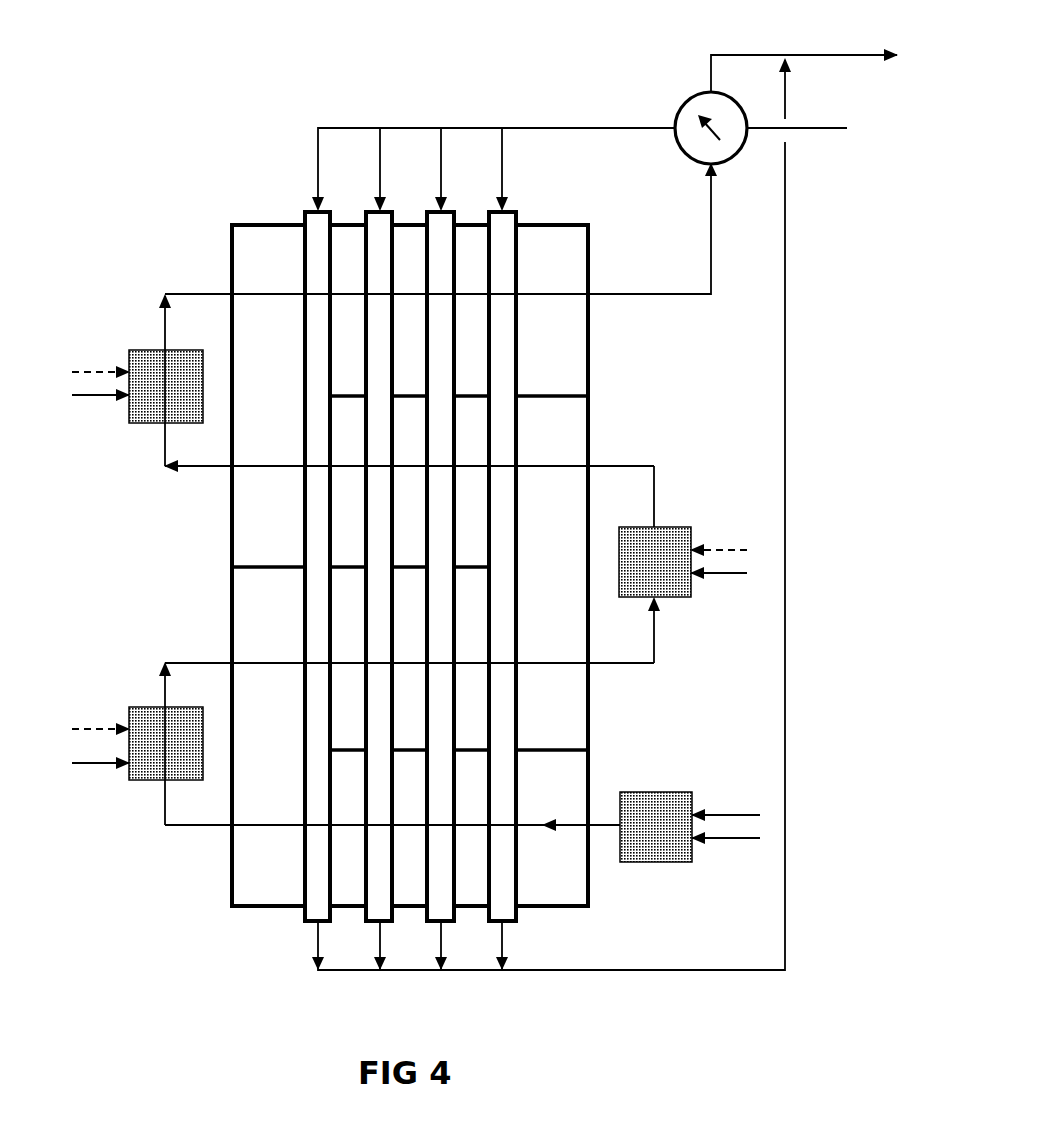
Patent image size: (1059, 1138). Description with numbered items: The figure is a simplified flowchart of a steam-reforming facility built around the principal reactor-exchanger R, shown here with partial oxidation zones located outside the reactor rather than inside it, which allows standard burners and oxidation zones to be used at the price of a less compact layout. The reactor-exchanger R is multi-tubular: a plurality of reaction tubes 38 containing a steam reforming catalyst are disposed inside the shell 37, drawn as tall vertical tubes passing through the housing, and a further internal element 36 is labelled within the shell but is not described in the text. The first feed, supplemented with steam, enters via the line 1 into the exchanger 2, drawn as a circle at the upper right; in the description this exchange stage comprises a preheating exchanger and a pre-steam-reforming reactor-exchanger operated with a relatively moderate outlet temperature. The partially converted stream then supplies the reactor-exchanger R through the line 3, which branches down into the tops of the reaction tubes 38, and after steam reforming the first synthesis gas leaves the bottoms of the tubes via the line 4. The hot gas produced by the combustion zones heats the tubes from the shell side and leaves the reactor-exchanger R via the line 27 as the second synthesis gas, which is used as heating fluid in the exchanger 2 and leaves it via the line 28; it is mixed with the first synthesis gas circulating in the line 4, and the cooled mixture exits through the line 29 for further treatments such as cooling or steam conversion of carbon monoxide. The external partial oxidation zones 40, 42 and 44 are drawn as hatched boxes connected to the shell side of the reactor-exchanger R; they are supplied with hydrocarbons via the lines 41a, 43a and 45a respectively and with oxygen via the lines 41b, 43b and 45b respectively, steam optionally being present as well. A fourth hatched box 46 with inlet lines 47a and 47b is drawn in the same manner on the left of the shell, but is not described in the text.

The reactor-exchanger R is at (222, 190).
The line 1 is at (793, 133).
The exchanger 2 is at (675, 110).
The line 3 is at (540, 130).
The line 4 is at (630, 972).
The line 27 is at (643, 297).
The line 28 is at (703, 80).
The line 29 is at (820, 60).
The baffle 36 is at (268, 567).
The shell 37 is at (594, 375).
The reaction tubes 38 is at (363, 235).
The external partial oxidation zone 40 is at (635, 812).
The line 41a is at (713, 840).
The line 41b is at (712, 815).
The complementary combustion zone 42 is at (148, 767).
The line 43a is at (118, 766).
The line 43b is at (118, 729).
The complementary combustion zone 44 is at (665, 537).
The line 45a is at (713, 575).
The line 45b is at (710, 550).
The heat exchanger 46 is at (148, 410).
The heat exchange medium inlet 47a is at (120, 397).
The heat exchange medium inlet 47b is at (123, 372).